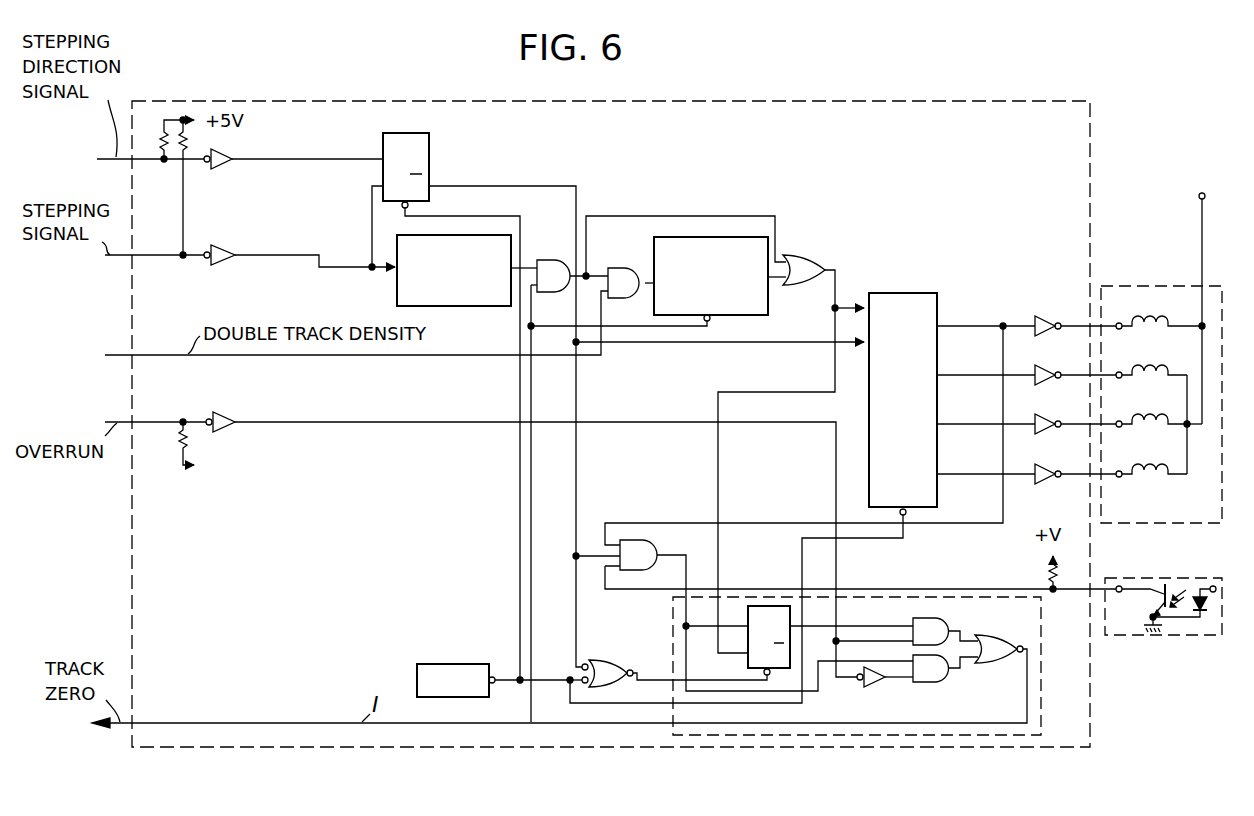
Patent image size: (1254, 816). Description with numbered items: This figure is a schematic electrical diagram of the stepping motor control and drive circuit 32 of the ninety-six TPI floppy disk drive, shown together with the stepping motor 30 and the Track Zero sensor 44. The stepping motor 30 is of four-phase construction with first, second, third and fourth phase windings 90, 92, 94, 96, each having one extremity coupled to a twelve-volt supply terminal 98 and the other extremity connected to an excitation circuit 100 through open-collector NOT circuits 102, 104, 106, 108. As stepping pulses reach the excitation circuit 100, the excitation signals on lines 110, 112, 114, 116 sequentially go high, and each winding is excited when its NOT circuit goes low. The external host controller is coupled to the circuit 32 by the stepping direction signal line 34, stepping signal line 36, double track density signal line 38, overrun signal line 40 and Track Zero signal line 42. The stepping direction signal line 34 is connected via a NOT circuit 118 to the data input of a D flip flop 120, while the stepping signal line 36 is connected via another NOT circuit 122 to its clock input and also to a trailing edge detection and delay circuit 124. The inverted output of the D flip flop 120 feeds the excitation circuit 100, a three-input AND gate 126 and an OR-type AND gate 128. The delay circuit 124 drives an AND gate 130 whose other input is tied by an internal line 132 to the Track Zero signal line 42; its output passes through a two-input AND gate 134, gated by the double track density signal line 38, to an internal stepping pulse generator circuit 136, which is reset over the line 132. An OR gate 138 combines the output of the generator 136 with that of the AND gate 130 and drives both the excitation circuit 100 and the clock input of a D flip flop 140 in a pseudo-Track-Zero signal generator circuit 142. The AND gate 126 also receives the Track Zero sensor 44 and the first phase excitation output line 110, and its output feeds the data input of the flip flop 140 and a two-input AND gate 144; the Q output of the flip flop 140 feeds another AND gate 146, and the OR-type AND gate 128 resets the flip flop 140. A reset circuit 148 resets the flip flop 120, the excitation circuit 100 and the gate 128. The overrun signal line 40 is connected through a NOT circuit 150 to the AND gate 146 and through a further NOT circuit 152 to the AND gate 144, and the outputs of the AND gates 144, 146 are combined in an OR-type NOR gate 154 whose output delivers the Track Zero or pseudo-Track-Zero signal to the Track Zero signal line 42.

The stepping motor 30 is at (1161, 379).
The stepping motor control and drive circuit 32 is at (1090, 140).
The stepping direction signal line 34 is at (152, 184).
The stepping signal line 36 is at (152, 280).
The double track density signal line 38 is at (152, 378).
The overrun signal line 40 is at (152, 446).
The Track Zero signal line 42 is at (150, 722).
The Track Zero sensor 44 is at (1200, 636).
The first phase winding 90 is at (1148, 320).
The second phase winding 92 is at (1150, 370).
The third phase winding 94 is at (1150, 420).
The fourth phase winding 96 is at (1150, 470).
The +12-volt supply terminal 98 is at (1196, 197).
The excitation circuit 100 is at (898, 292).
The open-collector NOT circuit 102 is at (1048, 318).
The open-collector NOT circuit 104 is at (1048, 368).
The open-collector NOT circuit 106 is at (1048, 418).
The open-collector NOT circuit 108 is at (1048, 468).
The first phase excitation output line 110 is at (946, 324).
The excitation signal line 112 is at (945, 373).
The excitation signal line 114 is at (946, 423).
The excitation signal line 116 is at (946, 473).
The NOT circuit 118 is at (228, 160).
The D flip flop 120 is at (432, 162).
The NOT circuit 122 is at (228, 256).
The trailing edge detection and delay circuit 124 is at (392, 284).
The three-input AND gate 126 is at (648, 552).
The OR-type AND gate 128 is at (608, 658).
The AND gate 130 is at (545, 258).
The internal line 132 is at (533, 516).
The two-input AND gate 134 is at (618, 268).
The internal stepping pulse generator circuit 136 is at (770, 302).
The OR gate 138 is at (808, 256).
The D flip flop 140 is at (746, 664).
The pseudo-Track-Zero signal generator circuit 142 is at (1041, 656).
The two-input AND gate 144 is at (934, 682).
The two-input AND gate 146 is at (910, 622).
The reset circuit 148 is at (450, 657).
The NOT circuit 150 is at (226, 412).
The NOT circuit 152 is at (876, 682).
The OR-type NOR gate 154 is at (996, 636).